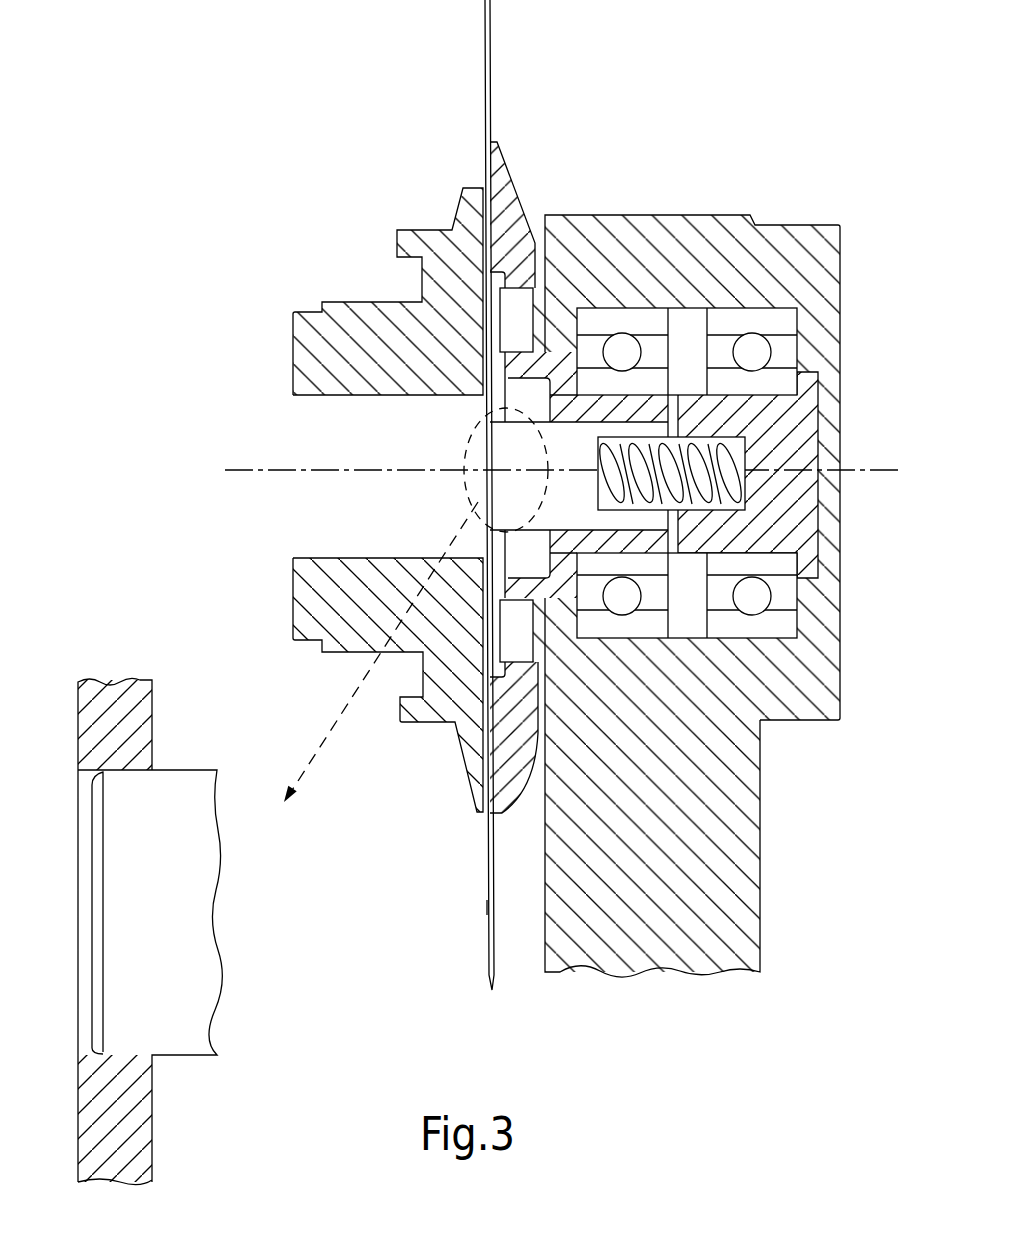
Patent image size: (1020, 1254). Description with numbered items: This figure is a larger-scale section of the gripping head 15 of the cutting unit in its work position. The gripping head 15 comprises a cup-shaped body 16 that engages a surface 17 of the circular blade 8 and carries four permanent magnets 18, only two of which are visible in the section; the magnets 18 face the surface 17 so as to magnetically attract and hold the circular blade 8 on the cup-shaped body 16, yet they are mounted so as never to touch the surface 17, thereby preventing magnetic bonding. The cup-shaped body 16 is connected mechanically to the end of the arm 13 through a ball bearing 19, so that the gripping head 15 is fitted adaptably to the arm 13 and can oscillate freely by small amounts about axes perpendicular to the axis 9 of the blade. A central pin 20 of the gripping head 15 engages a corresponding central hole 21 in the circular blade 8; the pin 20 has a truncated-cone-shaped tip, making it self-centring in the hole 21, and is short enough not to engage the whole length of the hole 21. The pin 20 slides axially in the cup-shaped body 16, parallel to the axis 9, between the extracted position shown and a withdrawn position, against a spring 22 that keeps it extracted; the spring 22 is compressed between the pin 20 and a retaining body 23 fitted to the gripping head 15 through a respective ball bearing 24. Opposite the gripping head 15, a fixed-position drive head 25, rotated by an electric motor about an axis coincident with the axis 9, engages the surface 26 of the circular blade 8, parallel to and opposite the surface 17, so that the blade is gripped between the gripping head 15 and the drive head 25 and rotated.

The circular blade 8 is at (490, 966).
The axis 9 is at (256, 448).
The arm 13 is at (745, 920).
The gripping head 15 is at (662, 150).
The cup-shaped body 16 is at (506, 196).
The surface 17 is at (500, 942).
The permanent magnets 18 is at (521, 305).
The ball bearing 19 is at (637, 320).
The central pin 20 is at (640, 432).
The central hole 21 is at (95, 1047).
The spring 22 is at (735, 448).
The retaining body 23 is at (830, 540).
The ball bearing 24 is at (790, 628).
The drive head 25 is at (343, 306).
The surface 26 is at (483, 906).